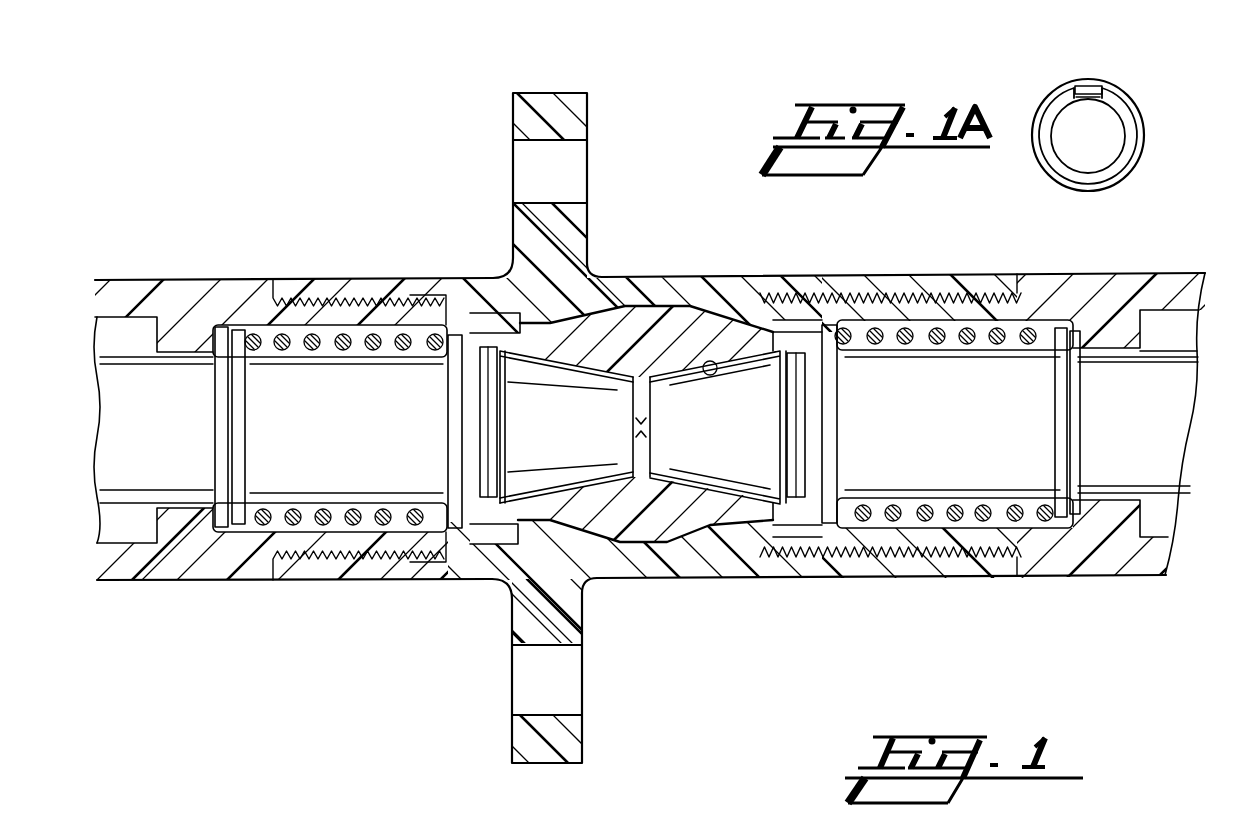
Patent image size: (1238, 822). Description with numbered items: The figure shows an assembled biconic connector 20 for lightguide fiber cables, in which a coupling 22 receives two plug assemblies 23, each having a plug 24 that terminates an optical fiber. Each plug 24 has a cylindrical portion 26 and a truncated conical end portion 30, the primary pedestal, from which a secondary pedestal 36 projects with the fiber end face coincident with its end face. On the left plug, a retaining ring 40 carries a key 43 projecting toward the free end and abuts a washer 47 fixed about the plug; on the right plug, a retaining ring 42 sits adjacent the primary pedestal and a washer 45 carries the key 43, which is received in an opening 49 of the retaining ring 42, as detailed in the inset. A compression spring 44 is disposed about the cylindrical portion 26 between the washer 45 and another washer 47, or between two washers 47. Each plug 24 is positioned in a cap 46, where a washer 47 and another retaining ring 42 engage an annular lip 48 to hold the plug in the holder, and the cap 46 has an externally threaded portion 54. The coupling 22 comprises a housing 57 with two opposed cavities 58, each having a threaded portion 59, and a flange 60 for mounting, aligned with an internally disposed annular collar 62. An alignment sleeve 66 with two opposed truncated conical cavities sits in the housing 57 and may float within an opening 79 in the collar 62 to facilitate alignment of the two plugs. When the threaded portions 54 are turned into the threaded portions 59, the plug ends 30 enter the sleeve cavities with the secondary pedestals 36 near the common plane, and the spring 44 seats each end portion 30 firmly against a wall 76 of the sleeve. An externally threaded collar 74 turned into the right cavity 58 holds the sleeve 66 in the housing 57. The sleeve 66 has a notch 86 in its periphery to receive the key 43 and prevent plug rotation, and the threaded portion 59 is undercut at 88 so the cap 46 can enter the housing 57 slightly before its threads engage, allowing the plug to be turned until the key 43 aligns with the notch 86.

In FIG. 1, the biconic connector 20 is at (420, 745).
In FIG. 1, the coupling 22 is at (333, 586).
In FIG. 1, the plug assembly 23 is at (183, 276).
In FIG. 1, the plug 24 is at (560, 395).
In FIG. 1, the cylindrical portion 26 is at (1021, 478).
In FIG. 1, the end portion 30 is at (707, 465).
In FIG. 1, the secondary pedestal 36 is at (638, 428).
In FIG. 1, the retaining ring 40 is at (456, 362).
In FIG. 1, the retaining ring 42 is at (800, 470).
In FIG. 1A, the retaining ring 42 is at (1130, 143).
In FIG. 1, the key 43 is at (488, 350).
In FIG. 1A, the key 43 is at (1105, 84).
In FIG. 1, the compression spring 44 is at (270, 520).
In FIG. 1, the washer 45 is at (830, 373).
In FIG. 1A, the washer 45 is at (1140, 122).
In FIG. 1, the cap 46 is at (1100, 284).
In FIG. 1, the washer 47 is at (239, 532).
In FIG. 1, the annular lip 48 is at (175, 522).
In FIG. 1A, the opening 49 is at (1070, 90).
In FIG. 1, the externally threaded portion 54 is at (980, 300).
In FIG. 1, the housing 57 is at (942, 568).
In FIG. 1, the cavity 58 is at (460, 583).
In FIG. 1, the threaded portion 59 is at (896, 555).
In FIG. 1, the flange 60 is at (583, 745).
In FIG. 1, the annular collar 62 is at (523, 605).
In FIG. 1, the alignment sleeve 66 is at (632, 330).
In FIG. 1, the externally threaded collar 74 is at (828, 328).
In FIG. 1, the wall 76 is at (710, 360).
In FIG. 1, the opening 79 is at (600, 580).
In FIG. 1, the notch 86 is at (771, 335).
In FIG. 1, the undercut 88 is at (296, 296).